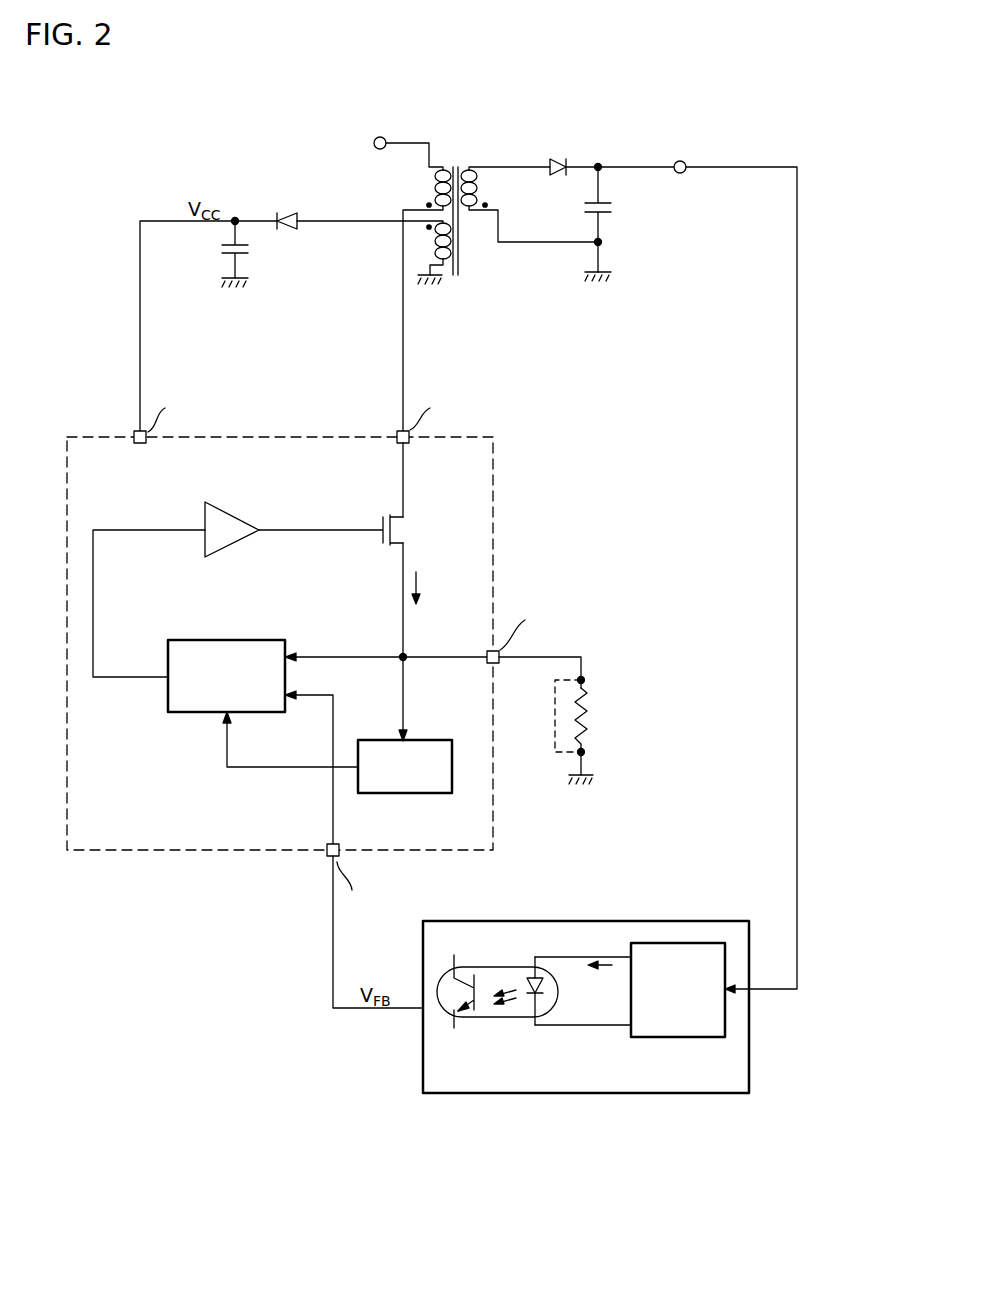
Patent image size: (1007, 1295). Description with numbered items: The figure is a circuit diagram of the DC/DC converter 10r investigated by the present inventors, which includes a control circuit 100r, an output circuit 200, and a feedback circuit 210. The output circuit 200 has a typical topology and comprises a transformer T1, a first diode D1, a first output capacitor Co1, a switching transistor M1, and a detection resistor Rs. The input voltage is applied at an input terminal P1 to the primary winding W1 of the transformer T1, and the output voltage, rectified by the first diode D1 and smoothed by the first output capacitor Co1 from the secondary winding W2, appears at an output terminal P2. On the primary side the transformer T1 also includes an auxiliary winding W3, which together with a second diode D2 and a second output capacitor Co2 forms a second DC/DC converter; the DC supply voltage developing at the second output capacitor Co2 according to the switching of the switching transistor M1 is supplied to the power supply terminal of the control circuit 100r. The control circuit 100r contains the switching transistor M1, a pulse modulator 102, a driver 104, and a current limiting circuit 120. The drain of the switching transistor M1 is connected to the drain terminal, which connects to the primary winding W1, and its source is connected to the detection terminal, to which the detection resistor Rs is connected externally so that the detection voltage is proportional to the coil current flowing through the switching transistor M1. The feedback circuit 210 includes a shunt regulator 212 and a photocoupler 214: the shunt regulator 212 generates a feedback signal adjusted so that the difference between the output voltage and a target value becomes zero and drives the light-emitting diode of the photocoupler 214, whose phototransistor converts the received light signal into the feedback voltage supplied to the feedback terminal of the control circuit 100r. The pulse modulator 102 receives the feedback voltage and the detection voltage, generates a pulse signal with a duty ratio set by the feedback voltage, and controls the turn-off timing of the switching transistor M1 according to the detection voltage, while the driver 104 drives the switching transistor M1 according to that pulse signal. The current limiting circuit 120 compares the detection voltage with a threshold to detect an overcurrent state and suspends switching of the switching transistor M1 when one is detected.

The DC/DC converter 10r is at (453, 1175).
The control circuit 100r is at (493, 487).
The pulse modulator 102 is at (248, 640).
The driver 104 is at (243, 518).
The current limiting circuit 120 is at (432, 740).
The output circuit 200 is at (207, 320).
The feedback circuit 210 is at (680, 921).
The shunt regulator 212 is at (680, 1037).
The photocoupler 214 is at (497, 1017).
The transformer T1 is at (399, 198).
The primary winding W1 is at (444, 166).
The secondary winding W2 is at (471, 166).
The auxiliary winding W3 is at (447, 270).
The first diode D1 is at (562, 150).
The second diode D2 is at (288, 212).
The first output capacitor Co1 is at (614, 209).
The second output capacitor Co2 is at (251, 247).
The switching transistor M1 is at (410, 525).
The detection resistor Rs is at (596, 718).
The input terminal P1 is at (380, 136).
The output terminal P2 is at (681, 160).